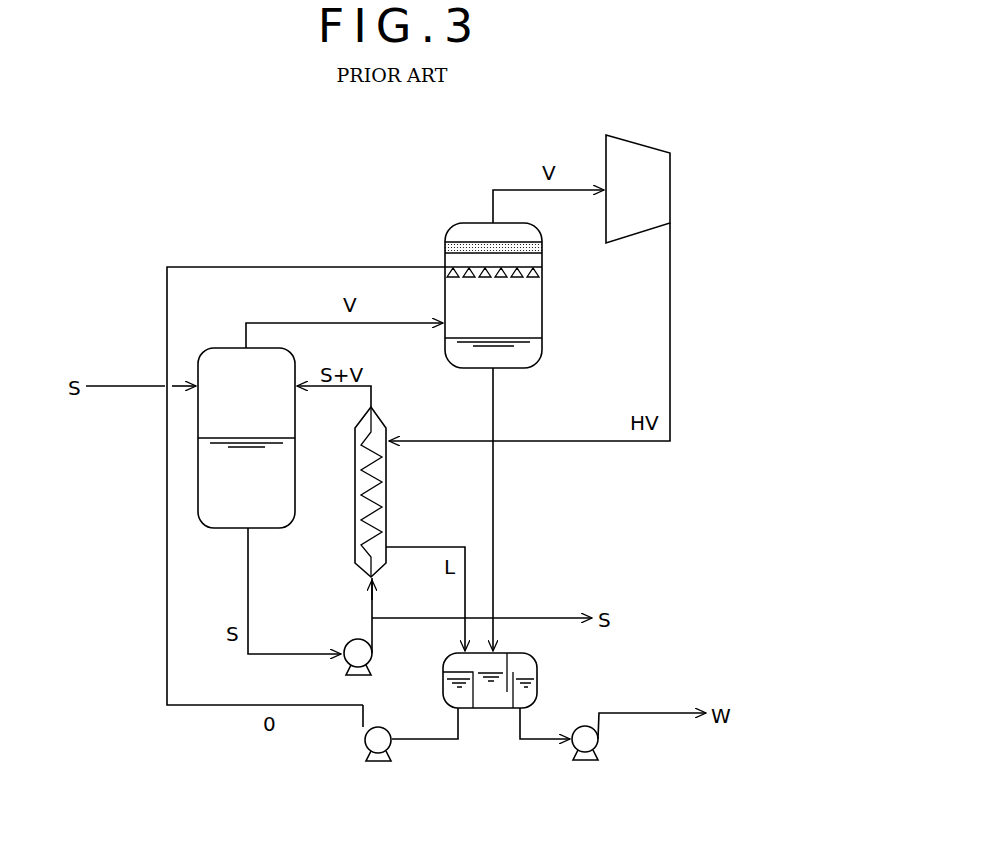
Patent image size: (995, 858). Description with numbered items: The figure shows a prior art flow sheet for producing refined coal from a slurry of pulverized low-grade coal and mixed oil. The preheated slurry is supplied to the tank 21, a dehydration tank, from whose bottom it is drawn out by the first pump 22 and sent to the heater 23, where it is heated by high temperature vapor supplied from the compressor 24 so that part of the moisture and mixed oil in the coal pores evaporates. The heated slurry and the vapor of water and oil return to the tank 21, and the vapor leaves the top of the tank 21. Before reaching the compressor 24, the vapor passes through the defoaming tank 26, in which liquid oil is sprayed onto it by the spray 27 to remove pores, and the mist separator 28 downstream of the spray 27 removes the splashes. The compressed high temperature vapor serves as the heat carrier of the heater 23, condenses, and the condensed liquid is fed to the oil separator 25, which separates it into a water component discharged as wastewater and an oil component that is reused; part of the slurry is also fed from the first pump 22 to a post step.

The tank 21 is at (228, 347).
The first pump 22 is at (350, 640).
The heater 23 is at (383, 424).
The compressor 24 is at (643, 140).
The oil separator 25 is at (538, 672).
The defoaming tank 26 is at (466, 222).
The spray 27 is at (543, 273).
The mist separator 28 is at (543, 249).